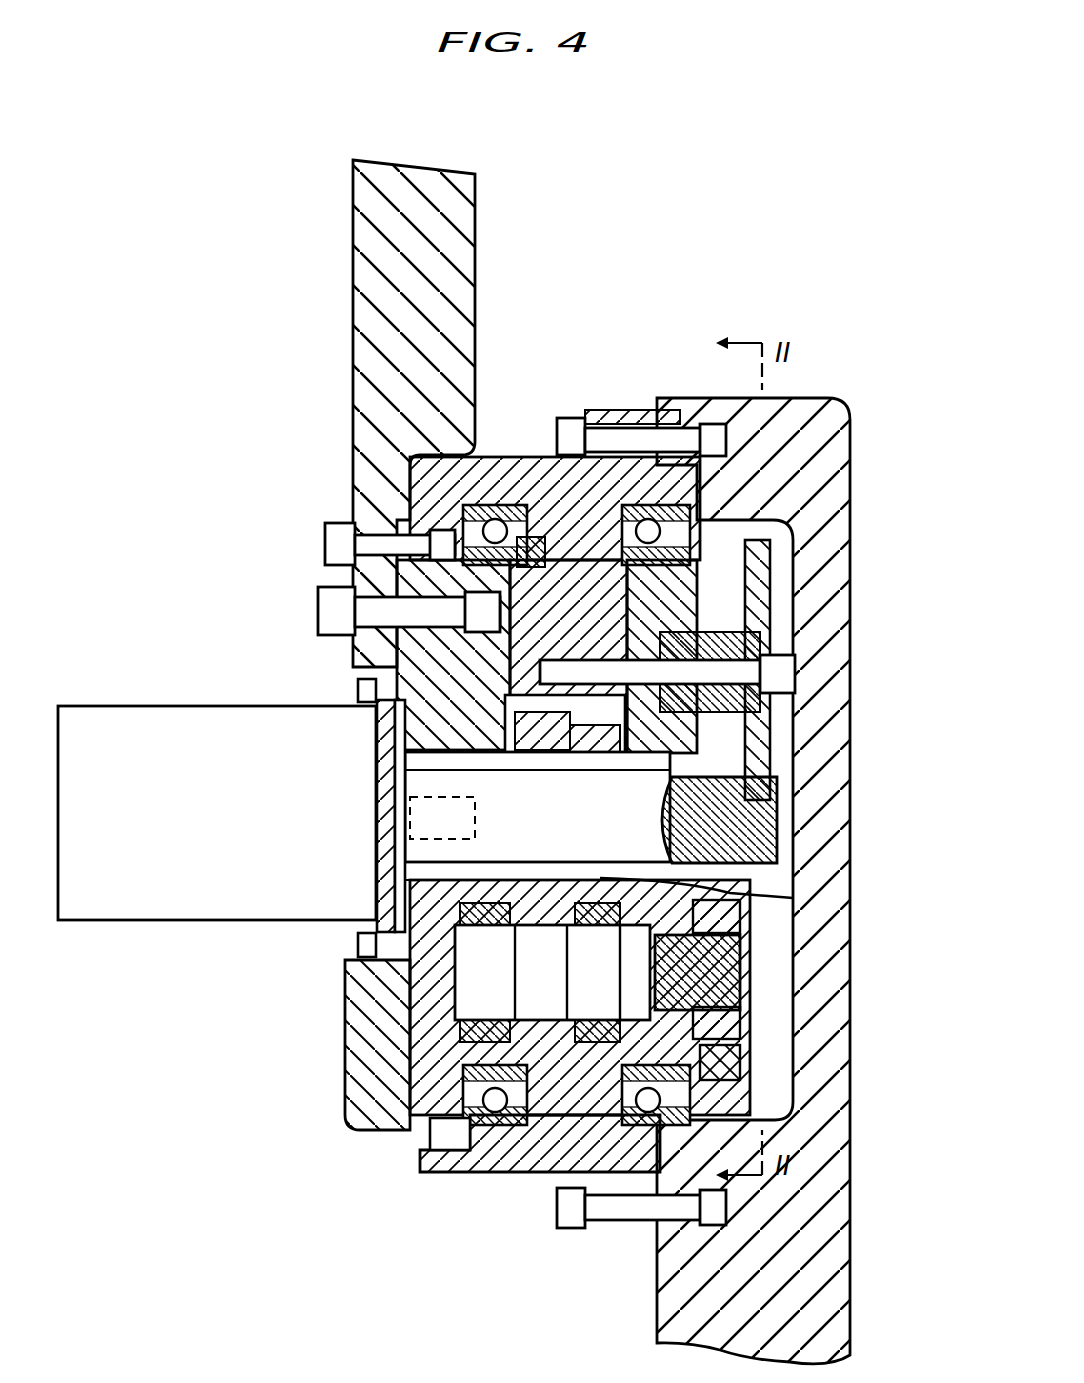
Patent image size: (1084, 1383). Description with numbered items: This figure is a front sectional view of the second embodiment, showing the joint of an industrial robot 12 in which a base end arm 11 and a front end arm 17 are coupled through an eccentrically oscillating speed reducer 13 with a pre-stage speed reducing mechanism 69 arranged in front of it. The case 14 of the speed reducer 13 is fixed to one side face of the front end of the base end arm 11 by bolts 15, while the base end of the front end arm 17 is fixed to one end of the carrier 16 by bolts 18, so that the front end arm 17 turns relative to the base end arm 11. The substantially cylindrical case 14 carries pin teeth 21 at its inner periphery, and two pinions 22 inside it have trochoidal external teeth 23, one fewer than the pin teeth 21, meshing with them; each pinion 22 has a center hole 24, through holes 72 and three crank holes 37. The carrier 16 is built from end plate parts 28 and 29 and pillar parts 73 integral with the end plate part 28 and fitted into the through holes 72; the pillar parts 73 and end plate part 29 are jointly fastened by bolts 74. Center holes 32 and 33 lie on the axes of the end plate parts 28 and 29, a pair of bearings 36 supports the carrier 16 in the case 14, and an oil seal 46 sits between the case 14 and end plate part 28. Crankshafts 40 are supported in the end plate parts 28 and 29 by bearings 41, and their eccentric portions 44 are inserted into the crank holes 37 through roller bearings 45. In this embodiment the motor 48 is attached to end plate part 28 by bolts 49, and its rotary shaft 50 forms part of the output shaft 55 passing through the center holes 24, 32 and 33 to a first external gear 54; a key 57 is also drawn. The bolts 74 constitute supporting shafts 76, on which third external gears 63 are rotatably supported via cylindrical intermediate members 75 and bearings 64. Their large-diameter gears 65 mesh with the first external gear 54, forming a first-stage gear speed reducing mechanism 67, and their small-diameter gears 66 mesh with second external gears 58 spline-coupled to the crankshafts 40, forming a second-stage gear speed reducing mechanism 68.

The base end arm 11 is at (820, 1260).
The industrial robot 12 is at (750, 268).
The eccentrically oscillating speed reducer 13 is at (700, 500).
The case 14 is at (480, 462).
The bolts 15 is at (570, 1215).
The carrier 16 is at (395, 660).
The front end arm 17 is at (360, 190).
The bolts 18 is at (325, 600).
The pin teeth 21 is at (495, 1173).
The pinions 22 is at (600, 540).
The external teeth 23 is at (552, 1173).
The center holes 24 is at (570, 762).
The end plate part 28 is at (420, 1077).
The end plate part 29 is at (715, 1073).
The center hole 32 is at (400, 882).
The center hole 33 is at (605, 863).
The bearings 36 is at (672, 1106).
The crank holes 37 is at (542, 1014).
The crankshafts 40 is at (400, 972).
The bearings 41 is at (415, 1024).
The eccentric portions 44 is at (715, 980).
The roller bearings 45 is at (542, 863).
The oil seal 46 is at (440, 1135).
The motor 48 is at (95, 712).
The bolts 49 is at (356, 691).
The rotary shaft 50 is at (395, 806).
The first external gear 54 is at (790, 859).
The output shaft 55 is at (700, 879).
The key 57 is at (402, 780).
The second external gears 58 is at (745, 1031).
The third external gears 63 is at (790, 712).
The bearings 64 is at (780, 660).
The large-diameter gears 65 is at (780, 560).
The small-diameter gears 66 is at (722, 730).
The first-stage gear speed reducing mechanism 67 is at (790, 796).
The second-stage gear speed reducing mechanism 68 is at (790, 931).
The pre-stage speed reducing mechanism 69 is at (765, 515).
The through holes 72 is at (535, 462).
The pillar parts 73 is at (540, 535).
The bolts 74 is at (660, 850).
The intermediate members 75 is at (720, 630).
The supporting shafts 76 is at (805, 675).